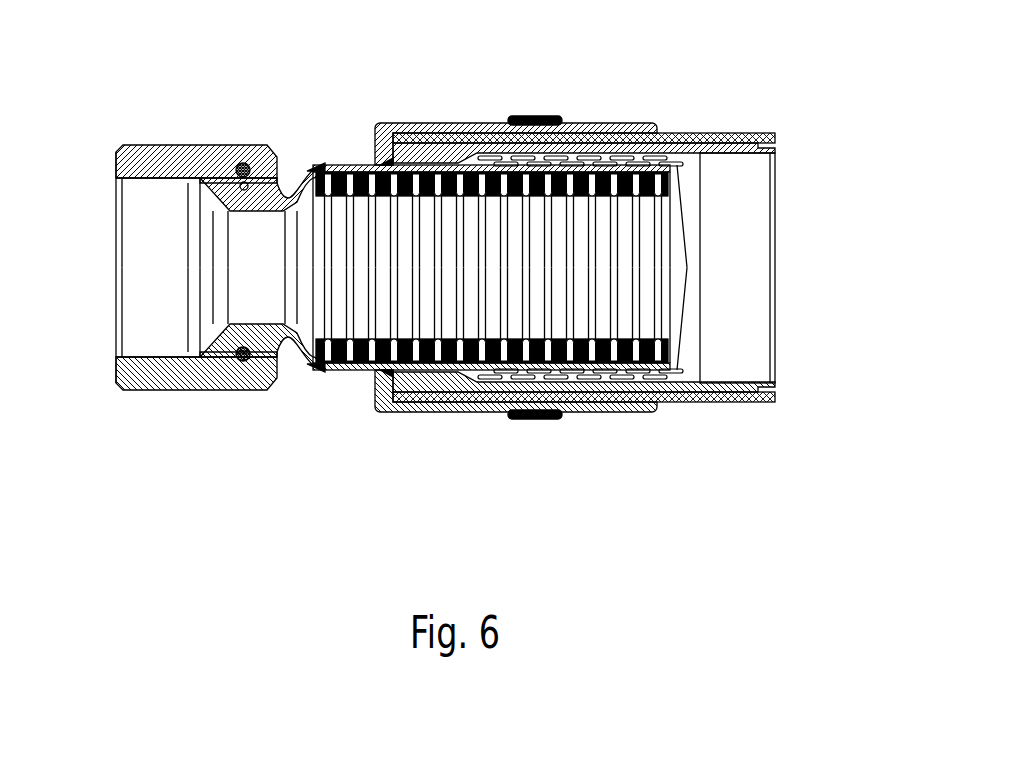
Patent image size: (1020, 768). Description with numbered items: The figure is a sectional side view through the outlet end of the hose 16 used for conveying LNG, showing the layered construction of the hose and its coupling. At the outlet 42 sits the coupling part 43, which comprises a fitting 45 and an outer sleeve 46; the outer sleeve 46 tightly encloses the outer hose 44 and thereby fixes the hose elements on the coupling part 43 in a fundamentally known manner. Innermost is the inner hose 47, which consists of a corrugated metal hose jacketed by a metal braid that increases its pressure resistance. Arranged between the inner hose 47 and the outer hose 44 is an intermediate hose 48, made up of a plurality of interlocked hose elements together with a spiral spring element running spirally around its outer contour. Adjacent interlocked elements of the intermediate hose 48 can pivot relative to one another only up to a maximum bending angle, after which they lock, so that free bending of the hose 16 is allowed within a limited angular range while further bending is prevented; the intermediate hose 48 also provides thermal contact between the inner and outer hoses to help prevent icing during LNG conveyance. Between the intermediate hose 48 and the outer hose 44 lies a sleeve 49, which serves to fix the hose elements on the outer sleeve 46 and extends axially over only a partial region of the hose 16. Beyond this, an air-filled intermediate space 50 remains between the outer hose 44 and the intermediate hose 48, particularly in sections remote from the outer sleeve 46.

The hose 16 is at (347, 86).
The outlet 42 is at (116, 237).
The coupling part 43 is at (252, 434).
The outer hose 44 is at (676, 140).
The fitting 45 is at (227, 145).
The outer sleeve 46 is at (452, 123).
The inner hose 47 is at (670, 352).
The intermediate hose 48 is at (685, 165).
The sleeve 49 is at (430, 378).
The intermediate space 50 is at (778, 150).